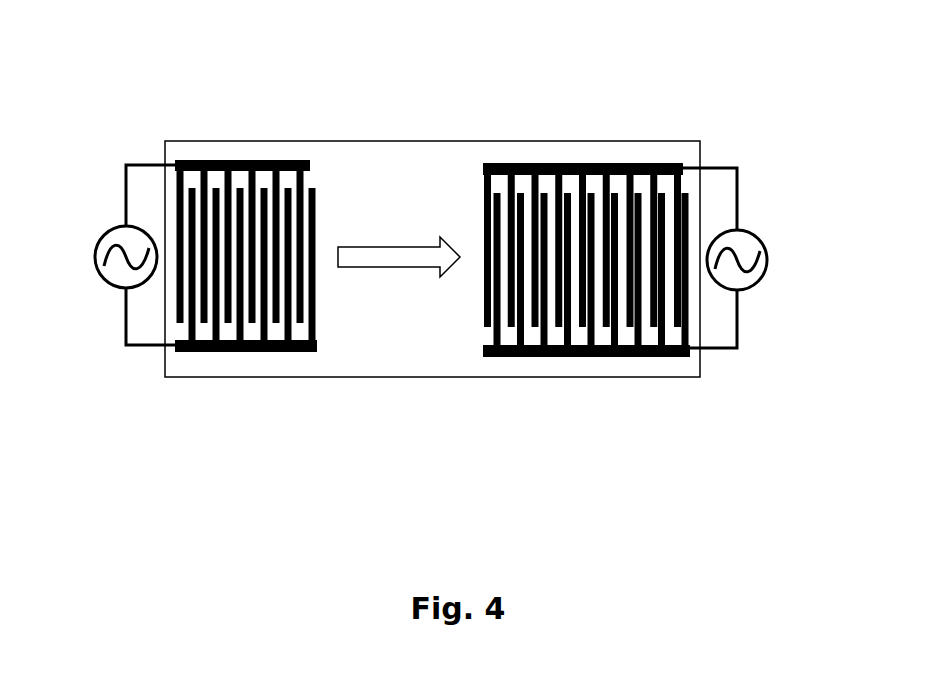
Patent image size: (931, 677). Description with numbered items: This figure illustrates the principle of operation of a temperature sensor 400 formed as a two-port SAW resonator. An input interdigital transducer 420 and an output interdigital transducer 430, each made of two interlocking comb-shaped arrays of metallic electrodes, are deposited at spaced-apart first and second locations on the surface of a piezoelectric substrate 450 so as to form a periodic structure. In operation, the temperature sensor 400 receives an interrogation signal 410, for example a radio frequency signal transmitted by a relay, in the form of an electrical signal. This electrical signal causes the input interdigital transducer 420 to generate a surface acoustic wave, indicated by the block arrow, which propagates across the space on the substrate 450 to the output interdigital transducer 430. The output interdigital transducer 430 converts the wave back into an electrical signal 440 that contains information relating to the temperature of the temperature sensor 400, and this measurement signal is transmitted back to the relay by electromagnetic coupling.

The temperature sensor 400 is at (423, 110).
The interrogation signal 410 is at (92, 298).
The input interdigital transducer 420 is at (247, 323).
The output interdigital transducer 430 is at (597, 323).
The electrical signal 440 is at (773, 292).
The piezoelectric substrate 450 is at (399, 287).